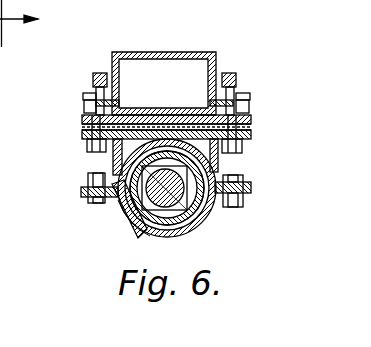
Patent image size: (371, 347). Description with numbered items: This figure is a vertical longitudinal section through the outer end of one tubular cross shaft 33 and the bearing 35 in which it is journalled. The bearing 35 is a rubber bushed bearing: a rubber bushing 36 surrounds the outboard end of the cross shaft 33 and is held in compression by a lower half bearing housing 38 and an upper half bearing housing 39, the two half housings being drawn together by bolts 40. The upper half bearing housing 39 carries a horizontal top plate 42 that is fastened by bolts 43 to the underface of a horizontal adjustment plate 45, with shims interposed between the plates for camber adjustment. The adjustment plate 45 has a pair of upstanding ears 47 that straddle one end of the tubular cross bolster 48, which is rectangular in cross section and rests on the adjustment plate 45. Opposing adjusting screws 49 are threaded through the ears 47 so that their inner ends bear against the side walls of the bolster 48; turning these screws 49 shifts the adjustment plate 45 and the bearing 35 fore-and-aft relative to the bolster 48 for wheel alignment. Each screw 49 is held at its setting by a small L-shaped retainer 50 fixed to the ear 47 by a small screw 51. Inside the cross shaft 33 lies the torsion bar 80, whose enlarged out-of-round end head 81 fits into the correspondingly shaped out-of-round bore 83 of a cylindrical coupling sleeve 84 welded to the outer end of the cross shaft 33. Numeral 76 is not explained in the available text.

The tubular cross shaft 33 is at (128, 240).
The bearing 35 is at (106, 256).
The rubber bushing 36 is at (128, 226).
The lower half bearing housing 38 is at (180, 242).
The upper half bearing housing 39 is at (113, 162).
The bolts 40 is at (88, 213).
The horizontal top plate 42 is at (246, 145).
The bolts 43 is at (95, 148).
The horizontal adjustment plate 45 is at (251, 120).
The upstanding ears 47 is at (229, 73).
The tubular cross bolster 48 is at (203, 52).
The adjusting screws 49 is at (84, 106).
The L-shaped retainer 50 is at (85, 94).
The small screw 51 is at (94, 78).
The gasket 76 is at (82, 125).
The torsion bar 80 is at (125, 168).
The out-of-round end head 81 is at (200, 231).
The out-of-round bore 83 is at (220, 222).
The coupling sleeve 84 is at (120, 214).